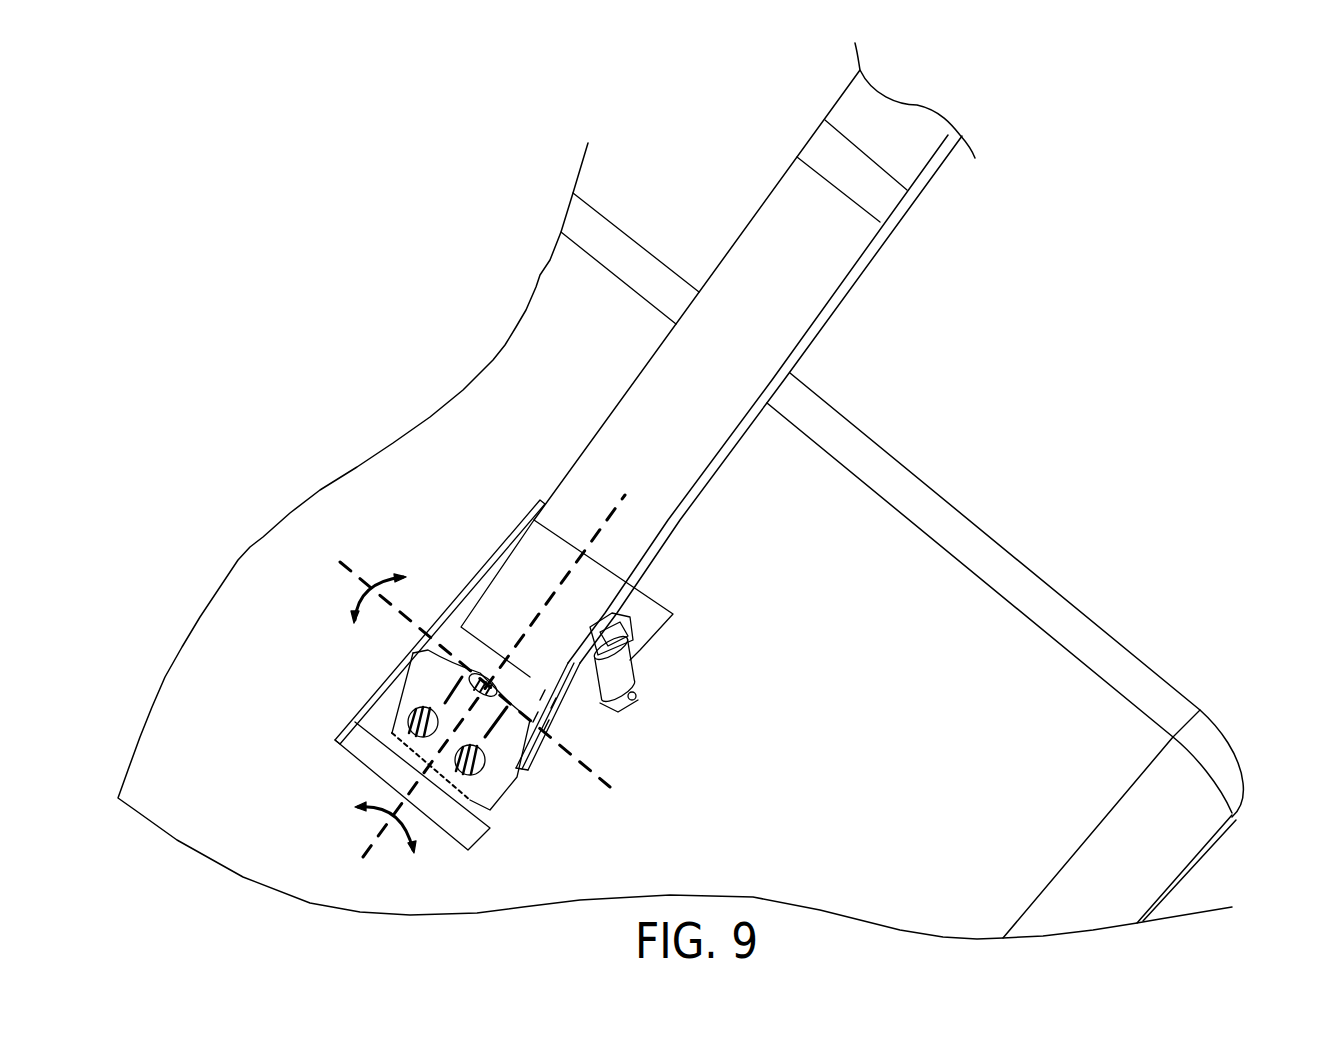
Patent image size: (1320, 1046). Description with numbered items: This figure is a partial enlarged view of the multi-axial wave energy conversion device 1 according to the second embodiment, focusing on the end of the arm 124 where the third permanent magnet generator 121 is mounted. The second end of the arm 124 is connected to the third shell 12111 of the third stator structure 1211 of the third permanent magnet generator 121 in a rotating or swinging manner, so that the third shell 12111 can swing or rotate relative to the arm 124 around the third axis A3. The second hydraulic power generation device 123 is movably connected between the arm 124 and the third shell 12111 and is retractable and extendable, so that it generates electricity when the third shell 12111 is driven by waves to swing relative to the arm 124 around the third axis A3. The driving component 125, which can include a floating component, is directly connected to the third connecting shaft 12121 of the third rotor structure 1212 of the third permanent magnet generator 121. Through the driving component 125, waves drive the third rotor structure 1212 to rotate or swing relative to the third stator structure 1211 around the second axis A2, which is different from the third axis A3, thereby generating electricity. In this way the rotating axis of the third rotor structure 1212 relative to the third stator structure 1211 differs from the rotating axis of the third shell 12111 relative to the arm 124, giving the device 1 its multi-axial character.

The multi-axial wave energy conversion device 1 is at (1213, 160).
The third permanent magnet generator 121 is at (606, 695).
The third stator structure 1211 is at (731, 724).
The third shell 12111 is at (695, 724).
The third rotor structure 1212 is at (540, 743).
The third connecting shaft 12121 is at (552, 758).
The second hydraulic power generation device 123 is at (827, 588).
The arm 124 is at (823, 277).
The driving component 125 is at (1078, 635).
The second axis A2 is at (345, 562).
The third axis A3 is at (368, 855).